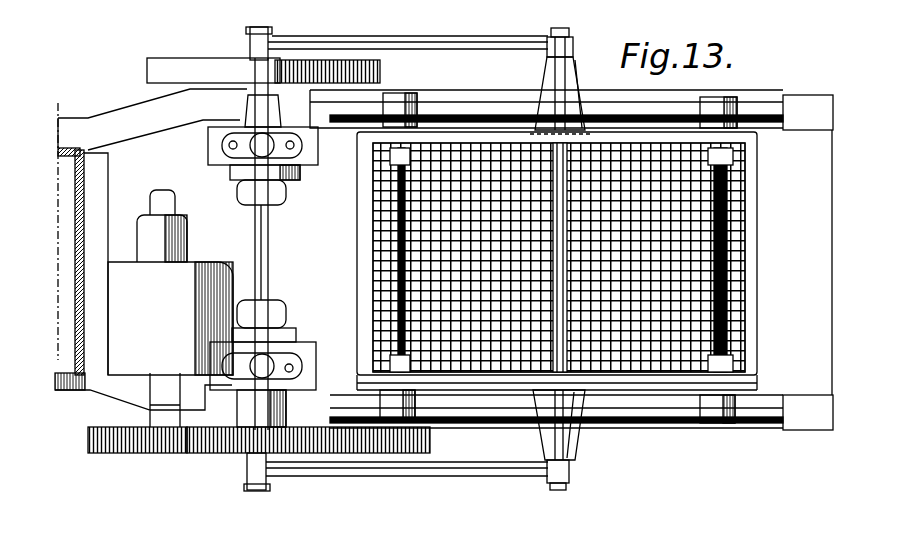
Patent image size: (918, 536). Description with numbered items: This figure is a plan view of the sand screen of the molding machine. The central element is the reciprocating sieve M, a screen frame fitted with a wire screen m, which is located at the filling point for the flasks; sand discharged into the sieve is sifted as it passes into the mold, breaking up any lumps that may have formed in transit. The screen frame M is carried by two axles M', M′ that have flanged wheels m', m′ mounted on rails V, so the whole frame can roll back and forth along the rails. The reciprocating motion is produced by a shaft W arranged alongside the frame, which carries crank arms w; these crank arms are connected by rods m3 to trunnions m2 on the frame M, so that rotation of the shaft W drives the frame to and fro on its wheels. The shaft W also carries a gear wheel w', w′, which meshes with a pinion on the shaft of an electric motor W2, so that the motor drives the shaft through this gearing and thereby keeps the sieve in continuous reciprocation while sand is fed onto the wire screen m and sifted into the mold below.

The shaft W is at (270, 243).
The crank arms w is at (243, 262).
The gear wheel w' is at (308, 464).
The gear wheel w′ is at (412, 455).
The electric motor W2 is at (160, 336).
The rods m3 is at (407, 244).
The trunnions m2 is at (570, 265).
The flanged wheels m' is at (570, 258).
The flanged wheels m′ is at (412, 98).
The rails V is at (663, 106).
The reciprocating sieve M is at (570, 261).
The axles M' is at (565, 257).
The axles M′ is at (398, 228).
The wire screen m is at (583, 257).